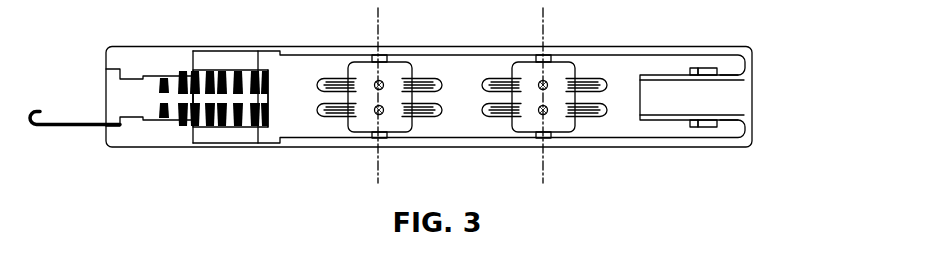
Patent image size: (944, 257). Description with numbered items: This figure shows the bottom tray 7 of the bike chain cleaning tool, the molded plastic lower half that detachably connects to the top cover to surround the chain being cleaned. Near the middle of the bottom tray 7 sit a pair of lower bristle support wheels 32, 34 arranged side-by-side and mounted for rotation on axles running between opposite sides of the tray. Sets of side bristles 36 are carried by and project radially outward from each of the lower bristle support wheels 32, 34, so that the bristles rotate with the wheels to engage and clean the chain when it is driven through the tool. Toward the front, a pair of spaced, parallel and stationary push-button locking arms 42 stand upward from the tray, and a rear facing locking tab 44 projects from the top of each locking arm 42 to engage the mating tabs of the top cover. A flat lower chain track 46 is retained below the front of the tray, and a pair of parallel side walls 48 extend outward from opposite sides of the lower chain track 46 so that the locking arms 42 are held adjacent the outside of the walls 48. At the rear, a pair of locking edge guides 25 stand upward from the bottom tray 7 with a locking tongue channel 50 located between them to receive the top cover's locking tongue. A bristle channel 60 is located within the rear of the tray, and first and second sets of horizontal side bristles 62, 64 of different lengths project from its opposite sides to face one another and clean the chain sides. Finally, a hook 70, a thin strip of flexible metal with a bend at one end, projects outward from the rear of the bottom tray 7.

The bottom tray 7 is at (124, 156).
The locking edge guides 25 is at (131, 49).
The lower bristle support wheel 32 is at (530, 62).
The lower bristle support wheel 34 is at (363, 62).
The side bristles 36 is at (332, 78).
The stationary push-button locking arms 42 is at (708, 68).
The rear facing locking tab 44 is at (692, 68).
The lower chain track 46 is at (742, 96).
The side walls 48 is at (727, 77).
The locking tongue channel 50 is at (110, 88).
The bristle channel 60 is at (232, 137).
The first set of horizontal side bristles 62 is at (235, 82).
The second set of horizontal side bristles 64 is at (192, 120).
The hook 70 is at (43, 128).